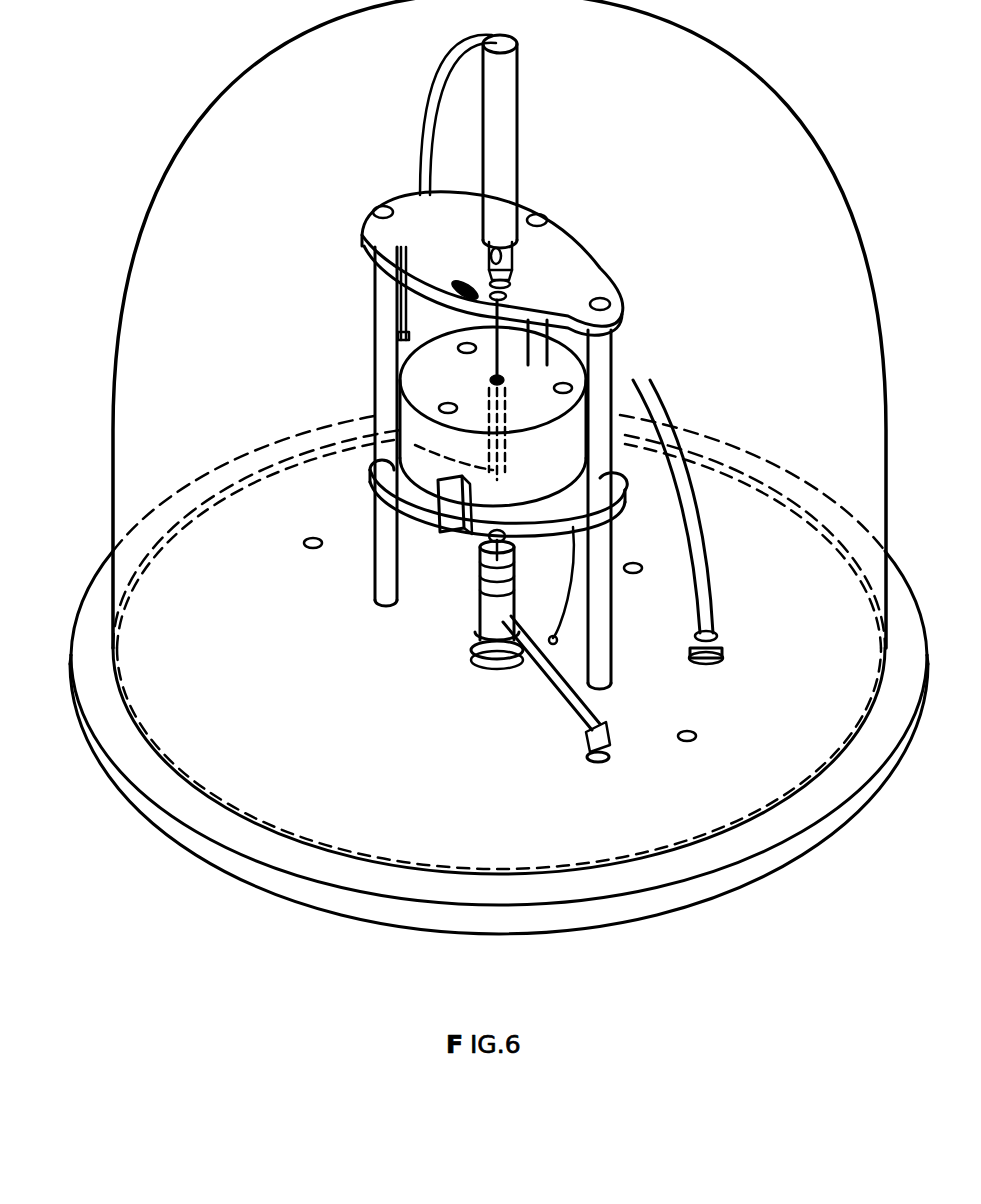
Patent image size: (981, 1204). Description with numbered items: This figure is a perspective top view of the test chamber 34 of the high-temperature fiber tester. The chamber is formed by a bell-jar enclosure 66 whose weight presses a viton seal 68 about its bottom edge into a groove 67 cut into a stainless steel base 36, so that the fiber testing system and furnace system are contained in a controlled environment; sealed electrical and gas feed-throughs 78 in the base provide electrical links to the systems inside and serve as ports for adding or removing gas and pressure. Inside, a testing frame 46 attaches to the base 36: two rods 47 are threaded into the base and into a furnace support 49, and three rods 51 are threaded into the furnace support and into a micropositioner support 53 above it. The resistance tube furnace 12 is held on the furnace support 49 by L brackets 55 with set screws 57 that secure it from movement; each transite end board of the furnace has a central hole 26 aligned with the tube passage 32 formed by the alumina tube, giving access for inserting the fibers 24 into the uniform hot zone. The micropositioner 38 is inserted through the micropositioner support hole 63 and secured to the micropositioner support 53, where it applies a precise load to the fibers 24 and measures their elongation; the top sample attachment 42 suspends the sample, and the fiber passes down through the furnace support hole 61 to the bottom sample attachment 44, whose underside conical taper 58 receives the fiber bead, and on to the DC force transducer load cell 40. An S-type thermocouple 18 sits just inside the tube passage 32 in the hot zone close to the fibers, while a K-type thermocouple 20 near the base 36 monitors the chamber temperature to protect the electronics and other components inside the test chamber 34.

The resistance tube furnace 12 is at (400, 393).
The S-type thermocouple 18 is at (478, 356).
The K-type thermocouple 20 is at (530, 647).
The fibers 24 is at (512, 343).
The hole 26 is at (520, 378).
The tube passage 32 is at (512, 380).
The test chamber 34 is at (739, 97).
The base 36 is at (818, 836).
The micropositioner 38 is at (501, 140).
The DC force transducer load cell 40 is at (500, 630).
The top sample attachment 42 is at (510, 298).
The bottom sample attachment 44 is at (490, 602).
The testing frame 46 is at (600, 570).
The rods 47 is at (372, 584).
The furnace support 49 is at (622, 512).
The rods 51 is at (390, 280).
The micropositioner support 53 is at (437, 212).
The L brackets 55 is at (472, 548).
The set screws 57 is at (458, 284).
The conical taper 58 is at (484, 562).
The furnace support hole 61 is at (440, 490).
The micropositioner support hole 63 is at (520, 266).
The enclosure 66 is at (817, 295).
The groove 67 is at (172, 528).
The seal 68 is at (850, 743).
The sealed electrical and gas feed-throughs 78 is at (365, 490).